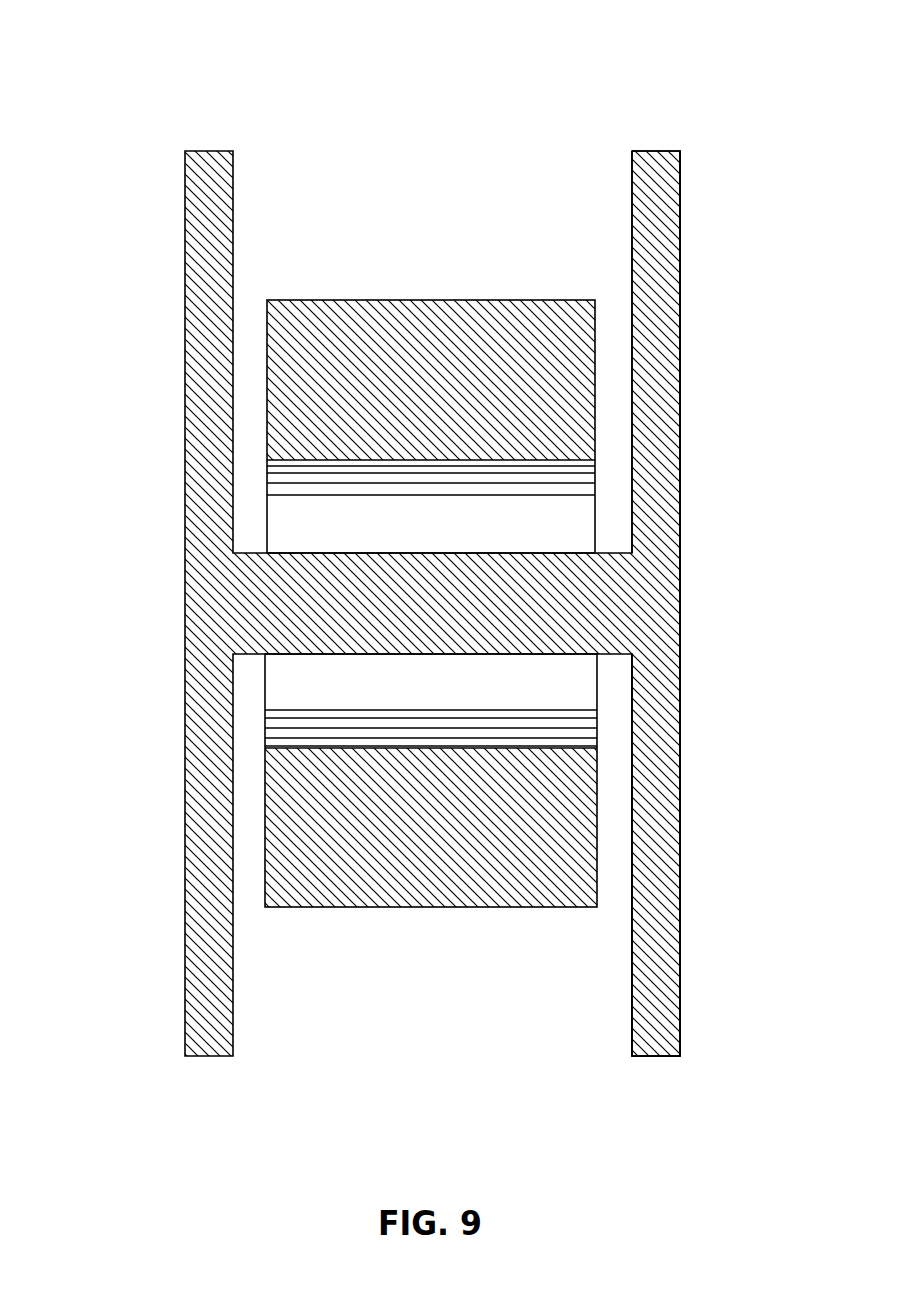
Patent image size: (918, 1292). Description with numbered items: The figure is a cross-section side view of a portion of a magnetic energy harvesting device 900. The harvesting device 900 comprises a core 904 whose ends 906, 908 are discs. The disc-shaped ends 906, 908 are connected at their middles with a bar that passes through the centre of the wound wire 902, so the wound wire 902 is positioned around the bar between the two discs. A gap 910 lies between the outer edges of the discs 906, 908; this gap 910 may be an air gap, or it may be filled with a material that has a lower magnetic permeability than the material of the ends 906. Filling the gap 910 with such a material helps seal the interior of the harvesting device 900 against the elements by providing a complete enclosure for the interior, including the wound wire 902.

The magnetic energy harvesting device 900 is at (108, 44).
The wound wire 902 is at (355, 300).
The core 904 is at (693, 227).
The disc-shaped end 906 is at (195, 229).
The disc-shaped end 908 is at (662, 858).
The gap 910 is at (425, 116).